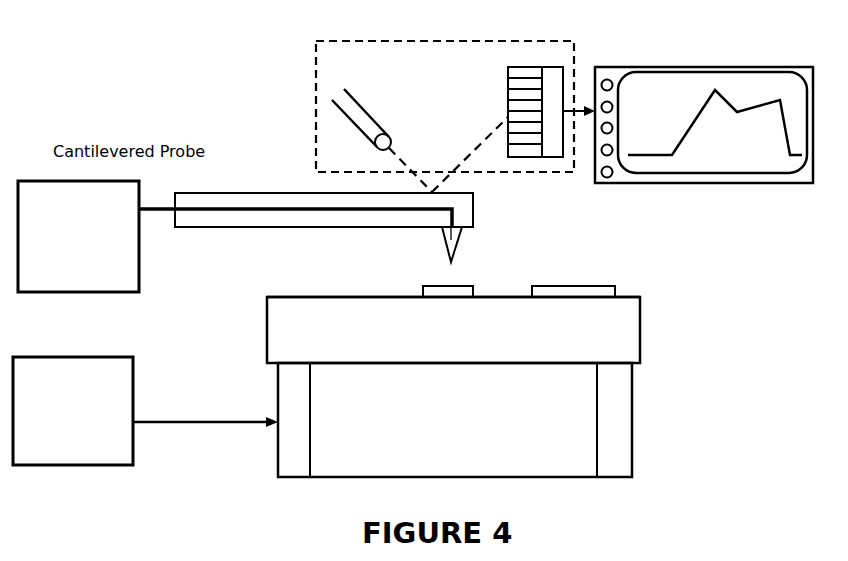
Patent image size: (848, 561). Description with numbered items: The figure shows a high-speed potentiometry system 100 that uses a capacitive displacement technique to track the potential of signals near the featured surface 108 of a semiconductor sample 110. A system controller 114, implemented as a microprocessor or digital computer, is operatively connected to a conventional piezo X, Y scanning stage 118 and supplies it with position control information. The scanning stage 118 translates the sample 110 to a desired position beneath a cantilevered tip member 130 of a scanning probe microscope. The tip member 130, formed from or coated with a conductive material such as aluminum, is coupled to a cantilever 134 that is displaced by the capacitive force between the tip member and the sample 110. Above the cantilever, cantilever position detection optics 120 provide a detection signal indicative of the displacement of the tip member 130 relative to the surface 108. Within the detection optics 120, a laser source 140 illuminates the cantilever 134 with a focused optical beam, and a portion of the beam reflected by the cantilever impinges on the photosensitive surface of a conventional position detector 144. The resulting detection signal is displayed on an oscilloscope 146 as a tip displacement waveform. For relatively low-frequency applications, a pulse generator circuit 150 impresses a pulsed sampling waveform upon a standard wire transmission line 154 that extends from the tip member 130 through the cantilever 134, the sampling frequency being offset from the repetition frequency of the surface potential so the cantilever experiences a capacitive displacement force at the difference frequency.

The high-speed potentiometry system 100 is at (124, 64).
The featured surface 108 is at (304, 297).
The semiconductor sample 110 is at (614, 353).
The system controller 114 is at (63, 357).
The piezo X, Y scanning stage 118 is at (566, 418).
The cantilever position detection optics 120 is at (443, 41).
The cantilevered tip member 130 is at (460, 242).
The cantilever 134 is at (252, 193).
The laser source 140 is at (375, 114).
The position detector 144 is at (508, 83).
The oscilloscope 146 is at (673, 67).
The pulse generator circuit 150 is at (94, 270).
The wire transmission line 154 is at (293, 209).